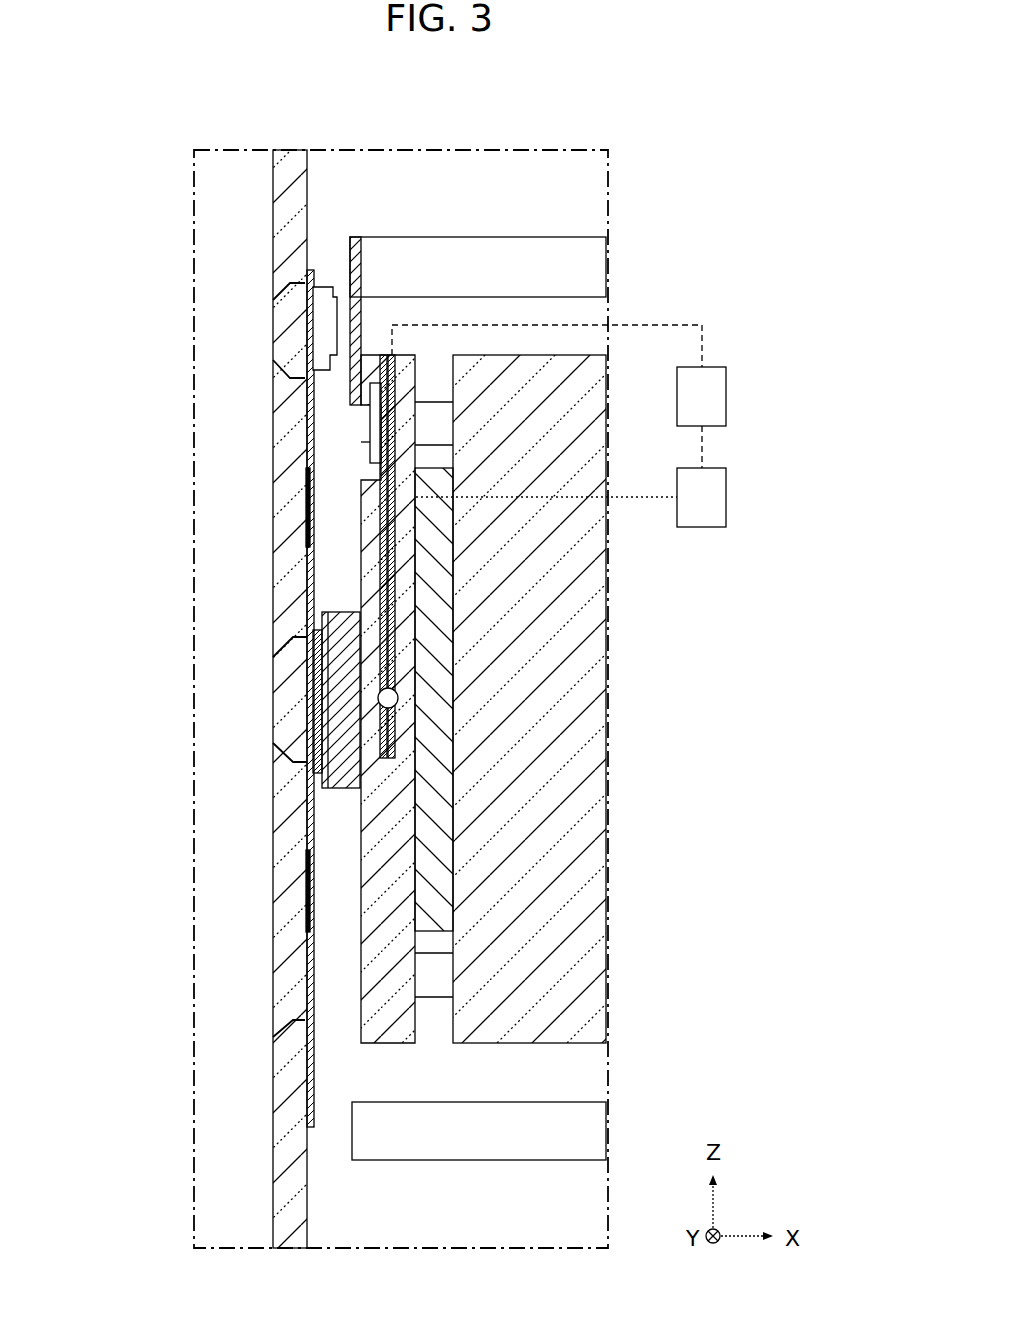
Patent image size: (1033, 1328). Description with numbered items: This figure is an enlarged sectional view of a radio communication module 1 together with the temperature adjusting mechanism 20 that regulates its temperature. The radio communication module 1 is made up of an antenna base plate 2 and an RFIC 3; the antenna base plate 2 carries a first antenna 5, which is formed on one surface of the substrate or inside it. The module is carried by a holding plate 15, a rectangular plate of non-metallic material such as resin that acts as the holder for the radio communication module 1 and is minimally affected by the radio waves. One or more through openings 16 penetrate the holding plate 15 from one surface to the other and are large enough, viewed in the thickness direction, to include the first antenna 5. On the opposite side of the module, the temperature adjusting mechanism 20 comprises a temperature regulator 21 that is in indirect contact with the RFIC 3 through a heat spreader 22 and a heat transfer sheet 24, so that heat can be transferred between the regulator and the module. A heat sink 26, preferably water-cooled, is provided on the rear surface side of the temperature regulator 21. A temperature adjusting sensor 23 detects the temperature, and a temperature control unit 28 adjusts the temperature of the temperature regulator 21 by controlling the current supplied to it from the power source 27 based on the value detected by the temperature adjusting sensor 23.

The radio communication module 1 is at (310, 297).
The antenna base plate 2 is at (306, 426).
The RFIC 3 is at (303, 670).
The first antenna 5 is at (306, 497).
The holding plate 15 is at (291, 163).
The through openings 16 is at (287, 383).
The temperature adjusting mechanism 20 is at (575, 686).
The temperature regulator 21 is at (437, 745).
The heat spreader 22 is at (407, 882).
The temperature adjusting sensor 23 is at (394, 613).
The heat transfer sheet 24 is at (320, 789).
The heat sink 26 is at (578, 714).
The power source 27 is at (727, 496).
The temperature control unit 28 is at (727, 391).